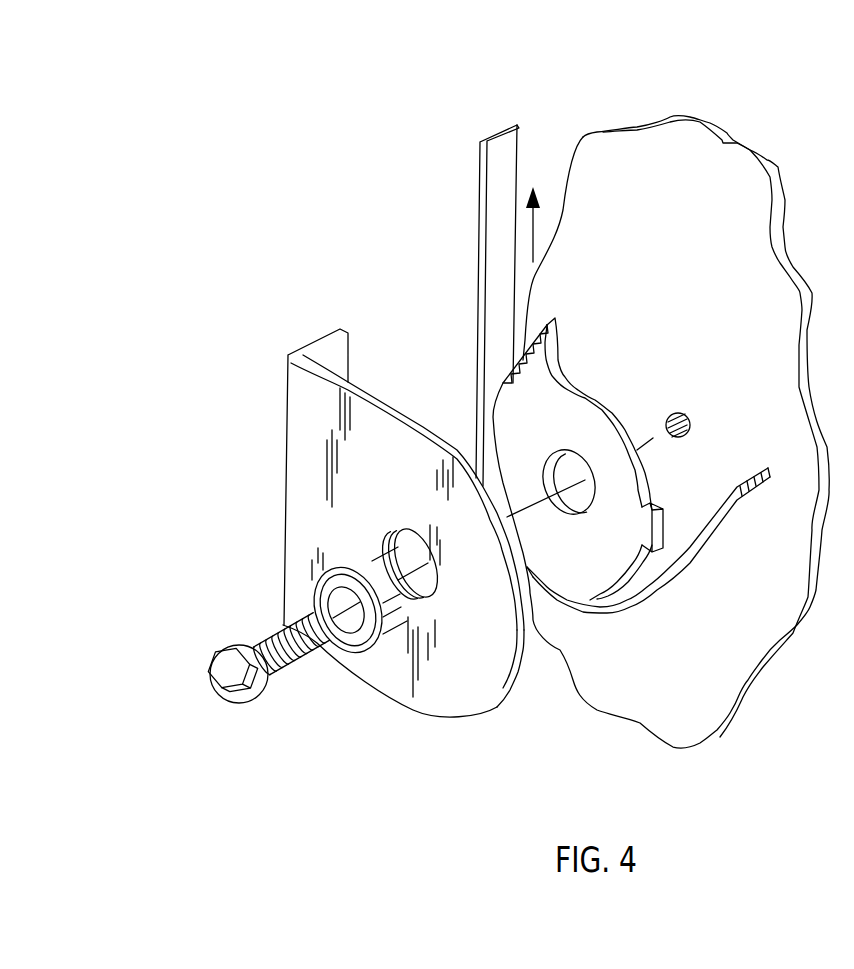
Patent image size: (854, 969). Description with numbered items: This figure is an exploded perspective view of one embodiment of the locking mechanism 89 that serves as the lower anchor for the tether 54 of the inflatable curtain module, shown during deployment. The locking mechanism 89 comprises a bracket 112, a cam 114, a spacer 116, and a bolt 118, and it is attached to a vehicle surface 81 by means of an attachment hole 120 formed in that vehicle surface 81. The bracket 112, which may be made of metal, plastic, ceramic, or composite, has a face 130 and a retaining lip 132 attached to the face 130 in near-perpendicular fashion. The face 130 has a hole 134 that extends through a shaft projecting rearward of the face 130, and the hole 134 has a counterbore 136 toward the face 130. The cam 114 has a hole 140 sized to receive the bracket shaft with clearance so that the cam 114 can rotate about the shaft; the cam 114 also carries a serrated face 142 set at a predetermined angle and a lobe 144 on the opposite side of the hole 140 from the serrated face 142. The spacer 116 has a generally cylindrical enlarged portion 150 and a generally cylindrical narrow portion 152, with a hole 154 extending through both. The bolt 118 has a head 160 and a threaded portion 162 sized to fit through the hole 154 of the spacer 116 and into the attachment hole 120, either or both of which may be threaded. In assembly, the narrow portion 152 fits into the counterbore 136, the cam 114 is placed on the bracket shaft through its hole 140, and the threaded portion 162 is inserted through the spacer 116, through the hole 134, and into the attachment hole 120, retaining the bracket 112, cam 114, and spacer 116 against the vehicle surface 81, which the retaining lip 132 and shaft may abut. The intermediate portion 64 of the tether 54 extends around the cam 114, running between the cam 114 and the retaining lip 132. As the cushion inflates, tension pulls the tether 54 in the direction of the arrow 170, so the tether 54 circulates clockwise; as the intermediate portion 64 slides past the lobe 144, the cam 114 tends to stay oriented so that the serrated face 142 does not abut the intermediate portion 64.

The vehicle surface 81 is at (730, 180).
The tether 54 is at (472, 195).
The intermediate portion 64 is at (503, 167).
The arrow 170 is at (533, 232).
The serrated face 142 is at (533, 337).
The hole 140 is at (567, 463).
The attachment hole 120 is at (678, 407).
The cam 114 is at (673, 500).
The lobe 144 is at (590, 592).
The face 130 is at (530, 640).
The bracket 112 is at (522, 698).
The counterbore 136 is at (435, 703).
The retaining lip 132 is at (332, 350).
The hole 134 is at (357, 528).
The locking mechanism 89 is at (237, 502).
The bolt 118 is at (255, 733).
The head 160 is at (227, 683).
The threaded portion 162 is at (272, 626).
The spacer 116 is at (343, 653).
The enlarged portion 150 is at (320, 588).
The hole 154 is at (350, 630).
The narrow portion 152 is at (372, 564).